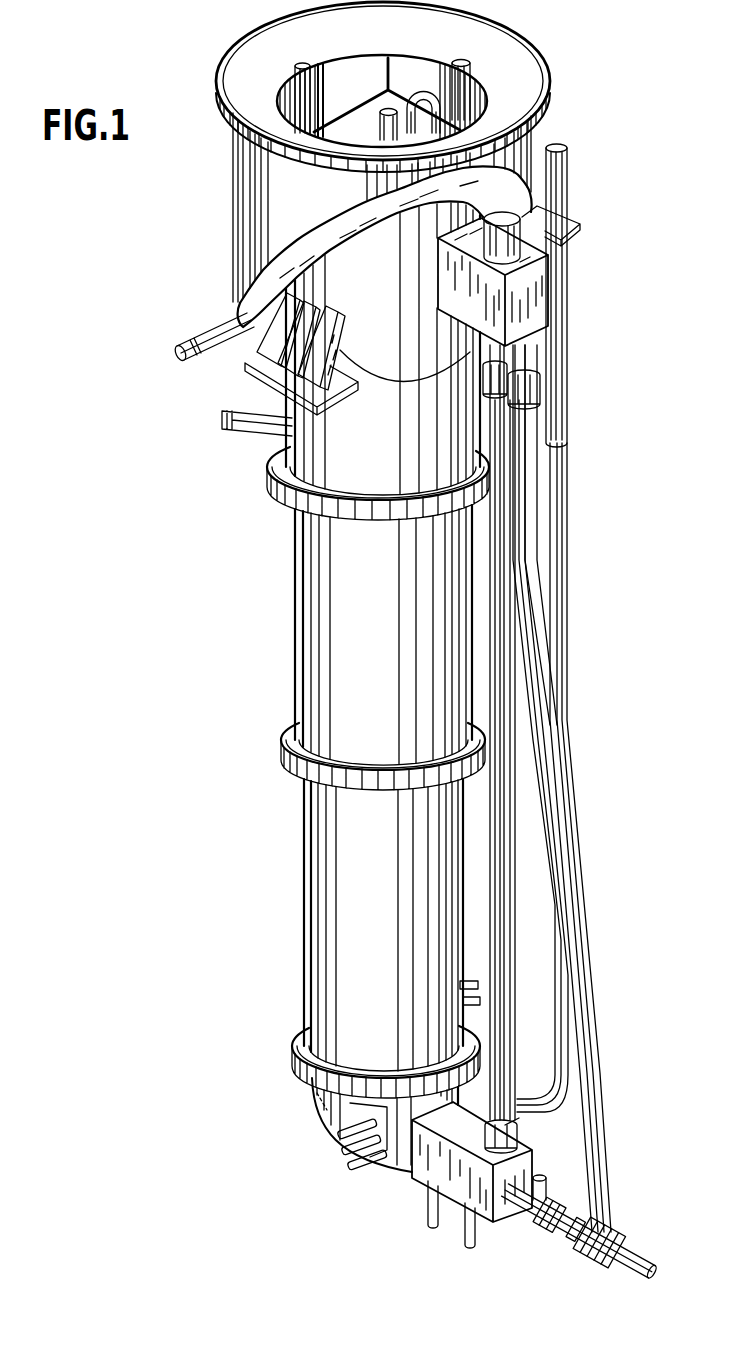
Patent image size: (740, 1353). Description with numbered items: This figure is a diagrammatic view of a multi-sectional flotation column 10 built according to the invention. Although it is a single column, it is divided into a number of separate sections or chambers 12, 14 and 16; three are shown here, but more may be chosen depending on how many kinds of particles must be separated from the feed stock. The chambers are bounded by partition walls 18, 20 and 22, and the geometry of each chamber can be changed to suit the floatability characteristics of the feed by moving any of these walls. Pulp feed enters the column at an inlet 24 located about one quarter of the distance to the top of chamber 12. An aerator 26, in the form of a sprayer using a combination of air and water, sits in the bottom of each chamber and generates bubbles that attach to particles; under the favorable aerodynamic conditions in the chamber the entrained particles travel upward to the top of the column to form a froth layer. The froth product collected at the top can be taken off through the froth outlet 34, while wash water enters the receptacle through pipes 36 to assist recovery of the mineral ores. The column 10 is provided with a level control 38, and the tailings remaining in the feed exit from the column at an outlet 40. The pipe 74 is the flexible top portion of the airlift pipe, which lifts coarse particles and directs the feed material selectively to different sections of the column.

The multi-sectional flotation column 10 is at (247, 541).
The chamber 12 is at (334, 78).
The chamber 14 is at (427, 70).
The chamber 16 is at (360, 134).
The partition wall 18 is at (397, 68).
The partition wall 20 is at (433, 140).
The partition wall 22 is at (332, 134).
The inlet 24 is at (250, 412).
The aerator 26 is at (376, 1158).
The froth outlet 34 is at (202, 331).
The pipes 36 is at (297, 64).
The level control 38 is at (570, 192).
The outlet 40 is at (644, 1262).
The pipe 74 is at (392, 88).